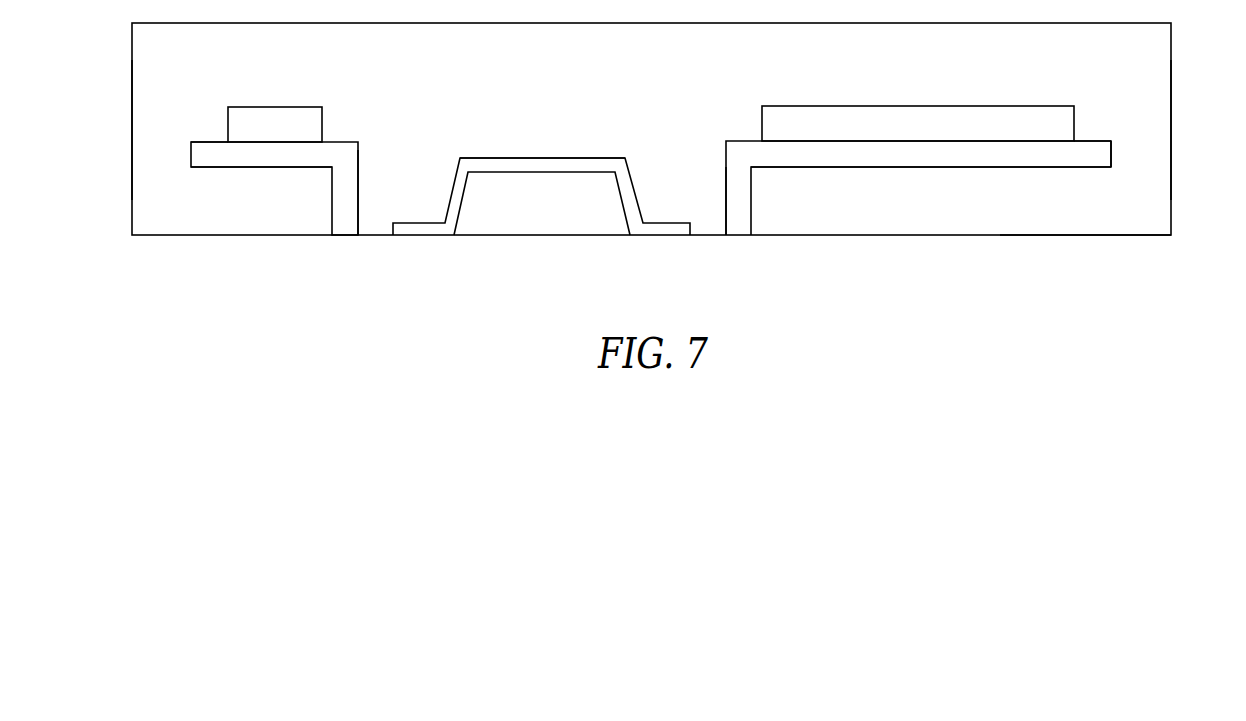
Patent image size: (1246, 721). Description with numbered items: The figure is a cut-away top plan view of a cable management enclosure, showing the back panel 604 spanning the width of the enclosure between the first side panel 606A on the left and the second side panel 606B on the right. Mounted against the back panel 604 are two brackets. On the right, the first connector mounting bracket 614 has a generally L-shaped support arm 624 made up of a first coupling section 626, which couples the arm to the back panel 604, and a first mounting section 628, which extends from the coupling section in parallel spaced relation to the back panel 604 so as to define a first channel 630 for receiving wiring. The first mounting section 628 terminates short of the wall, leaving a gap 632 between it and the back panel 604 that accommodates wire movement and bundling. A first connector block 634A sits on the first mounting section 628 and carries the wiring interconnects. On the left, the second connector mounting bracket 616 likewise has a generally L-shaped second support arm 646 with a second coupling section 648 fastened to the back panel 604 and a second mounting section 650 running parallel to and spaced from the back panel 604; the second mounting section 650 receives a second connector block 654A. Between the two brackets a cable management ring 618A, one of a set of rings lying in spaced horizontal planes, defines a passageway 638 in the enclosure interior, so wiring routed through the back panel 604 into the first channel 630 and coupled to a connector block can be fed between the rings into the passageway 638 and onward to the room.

The back panel 604 is at (940, 237).
The first side panel 606A is at (130, 130).
The second side panel 606B is at (1173, 127).
The first connector mounting bracket 614 is at (1099, 141).
The second connector mounting bracket 616 is at (342, 142).
The cable management ring 618A is at (542, 158).
The support arm 624 is at (745, 141).
The first coupling section 626 is at (738, 191).
The first mounting section 628 is at (1092, 157).
The first channel 630 is at (930, 168).
The gap 632 is at (1089, 215).
The first connector block 634A is at (920, 106).
The passageway 638 is at (540, 217).
The second support arm 646 is at (203, 142).
The second coupling section 648 is at (343, 190).
The second mounting section 650 is at (208, 158).
The second connector block 654A is at (273, 107).